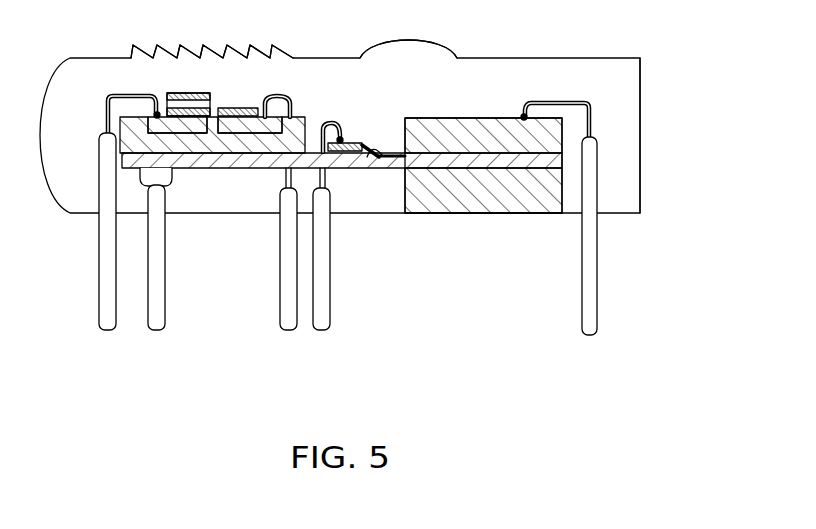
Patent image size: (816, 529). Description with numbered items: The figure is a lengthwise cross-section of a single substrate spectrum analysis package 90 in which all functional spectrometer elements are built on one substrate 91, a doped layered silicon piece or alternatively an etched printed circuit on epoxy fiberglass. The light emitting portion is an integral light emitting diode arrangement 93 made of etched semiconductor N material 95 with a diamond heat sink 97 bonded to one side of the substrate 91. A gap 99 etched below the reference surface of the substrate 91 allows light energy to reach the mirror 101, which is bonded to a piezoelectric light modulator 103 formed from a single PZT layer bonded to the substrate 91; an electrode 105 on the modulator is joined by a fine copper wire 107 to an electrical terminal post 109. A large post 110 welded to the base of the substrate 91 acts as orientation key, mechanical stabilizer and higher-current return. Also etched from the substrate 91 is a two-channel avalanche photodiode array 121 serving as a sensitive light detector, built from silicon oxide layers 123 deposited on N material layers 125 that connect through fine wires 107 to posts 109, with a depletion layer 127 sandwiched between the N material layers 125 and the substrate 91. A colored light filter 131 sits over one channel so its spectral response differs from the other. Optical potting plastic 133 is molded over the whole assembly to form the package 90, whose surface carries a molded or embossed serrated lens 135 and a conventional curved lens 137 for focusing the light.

The single substrate spectrum analysis package 90 is at (602, 58).
The substrate 91 is at (223, 162).
The integral light emitting diode arrangement 93 is at (458, 117).
The etched semiconductor N material 95 is at (427, 123).
The diamond heat sink 97 is at (430, 205).
The gap 99 is at (386, 148).
The mirror 101 is at (378, 160).
The piezoelectric light modulator 103 is at (347, 153).
The electrode 105 is at (342, 132).
The fine copper wire 107 is at (322, 124).
The electrical terminal post 109 is at (105, 333).
The large post 110 is at (152, 333).
The avalanche photodiode array 121 is at (110, 110).
The silicon oxide layer 123 is at (241, 109).
The N material layer 125 is at (193, 128).
The depletion layer 127 is at (128, 135).
The colored light filter 131 is at (183, 94).
The optical potting plastic 133 is at (633, 108).
The serrated lens 135 is at (177, 46).
The conventional curved lens 137 is at (418, 39).